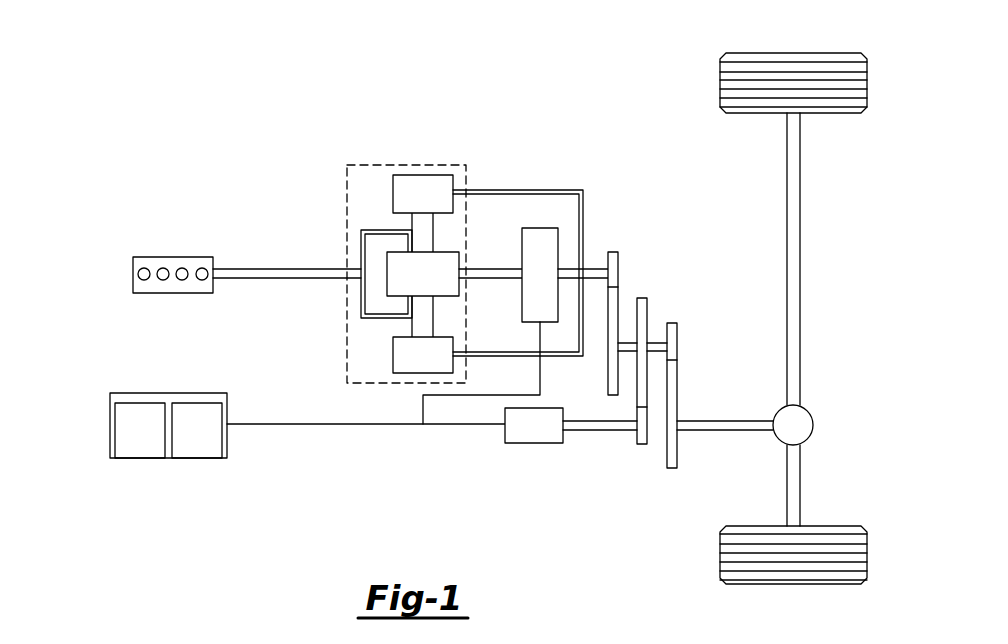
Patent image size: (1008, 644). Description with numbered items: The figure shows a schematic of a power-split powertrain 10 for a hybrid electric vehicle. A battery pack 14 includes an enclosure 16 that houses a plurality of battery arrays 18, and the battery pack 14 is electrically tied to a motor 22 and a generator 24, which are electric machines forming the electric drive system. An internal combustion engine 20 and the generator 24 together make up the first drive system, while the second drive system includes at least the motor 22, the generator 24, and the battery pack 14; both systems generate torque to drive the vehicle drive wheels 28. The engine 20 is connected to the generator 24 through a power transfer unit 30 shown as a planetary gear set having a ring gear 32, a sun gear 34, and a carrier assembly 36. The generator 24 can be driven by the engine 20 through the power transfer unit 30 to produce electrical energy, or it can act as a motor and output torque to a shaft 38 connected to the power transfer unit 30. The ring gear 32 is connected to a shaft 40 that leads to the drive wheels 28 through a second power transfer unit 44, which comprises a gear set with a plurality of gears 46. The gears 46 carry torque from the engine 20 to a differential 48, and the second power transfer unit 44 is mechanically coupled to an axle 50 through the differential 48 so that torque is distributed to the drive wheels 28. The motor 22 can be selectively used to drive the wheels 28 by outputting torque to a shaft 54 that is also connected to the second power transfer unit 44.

The powertrain 10 is at (212, 97).
The battery pack 14 is at (141, 423).
The enclosure 16 is at (169, 393).
The battery arrays 18 is at (138, 458).
The internal combustion engine 20 is at (133, 257).
The motor 22 is at (533, 443).
The generator 24 is at (558, 238).
The vehicle drive wheels 28 is at (795, 53).
The power transfer unit 30 is at (466, 165).
The ring gear 32 is at (393, 193).
The sun gear 34 is at (448, 296).
The carrier assembly 36 is at (361, 251).
The shaft 38 is at (496, 269).
The shaft 40 is at (598, 279).
The second power transfer unit 44 is at (689, 354).
The gears 46 is at (618, 265).
The differential 48 is at (813, 425).
The axle 50 is at (800, 261).
The shaft 54 is at (601, 430).